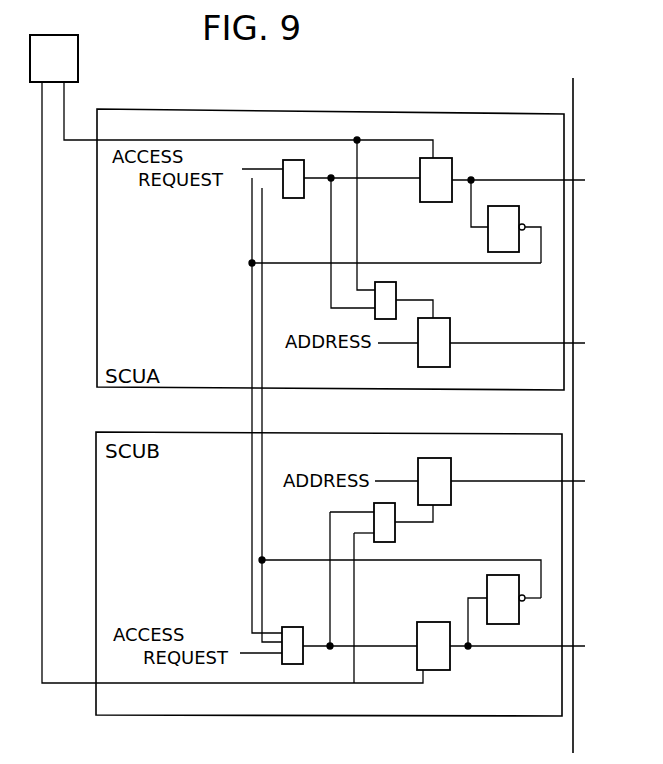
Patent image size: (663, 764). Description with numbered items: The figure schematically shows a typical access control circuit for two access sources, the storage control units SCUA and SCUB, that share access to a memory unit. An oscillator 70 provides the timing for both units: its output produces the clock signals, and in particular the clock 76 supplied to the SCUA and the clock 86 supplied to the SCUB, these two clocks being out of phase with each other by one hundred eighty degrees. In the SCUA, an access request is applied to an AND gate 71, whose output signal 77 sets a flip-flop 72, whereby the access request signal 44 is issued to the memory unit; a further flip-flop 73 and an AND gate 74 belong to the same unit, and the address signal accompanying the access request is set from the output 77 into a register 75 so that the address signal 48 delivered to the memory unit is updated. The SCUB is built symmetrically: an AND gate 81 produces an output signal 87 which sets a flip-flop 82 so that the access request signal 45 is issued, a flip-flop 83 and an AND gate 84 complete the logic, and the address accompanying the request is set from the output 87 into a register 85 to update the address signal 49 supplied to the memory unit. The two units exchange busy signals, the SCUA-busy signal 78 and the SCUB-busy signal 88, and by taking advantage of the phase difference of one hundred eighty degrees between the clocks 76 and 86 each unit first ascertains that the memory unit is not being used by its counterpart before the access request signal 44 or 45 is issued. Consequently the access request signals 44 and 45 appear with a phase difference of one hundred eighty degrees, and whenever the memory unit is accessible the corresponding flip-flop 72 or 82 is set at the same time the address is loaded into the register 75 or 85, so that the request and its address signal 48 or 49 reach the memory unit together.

The oscillator 70 is at (78, 58).
The clock 86 is at (42, 126).
The clock 76 is at (72, 108).
The AND gate 71 is at (296, 198).
The output signal 77 is at (387, 180).
The flip-flop 72 is at (437, 202).
The access request signal 44 is at (580, 180).
The flip-flop 73 is at (510, 206).
The SCUA-busy signal 78 is at (250, 420).
The SCUB-busy signal 88 is at (272, 412).
The AND gate 74 is at (396, 290).
The register 75 is at (450, 326).
The address signal 48 is at (586, 334).
The register 85 is at (451, 466).
The address signal 49 is at (580, 481).
The AND gate 84 is at (395, 536).
The AND gate 81 is at (292, 627).
The output signal 87 is at (396, 650).
The flip-flop 82 is at (432, 670).
The access request signal 45 is at (578, 646).
The flip-flop 83 is at (508, 624).